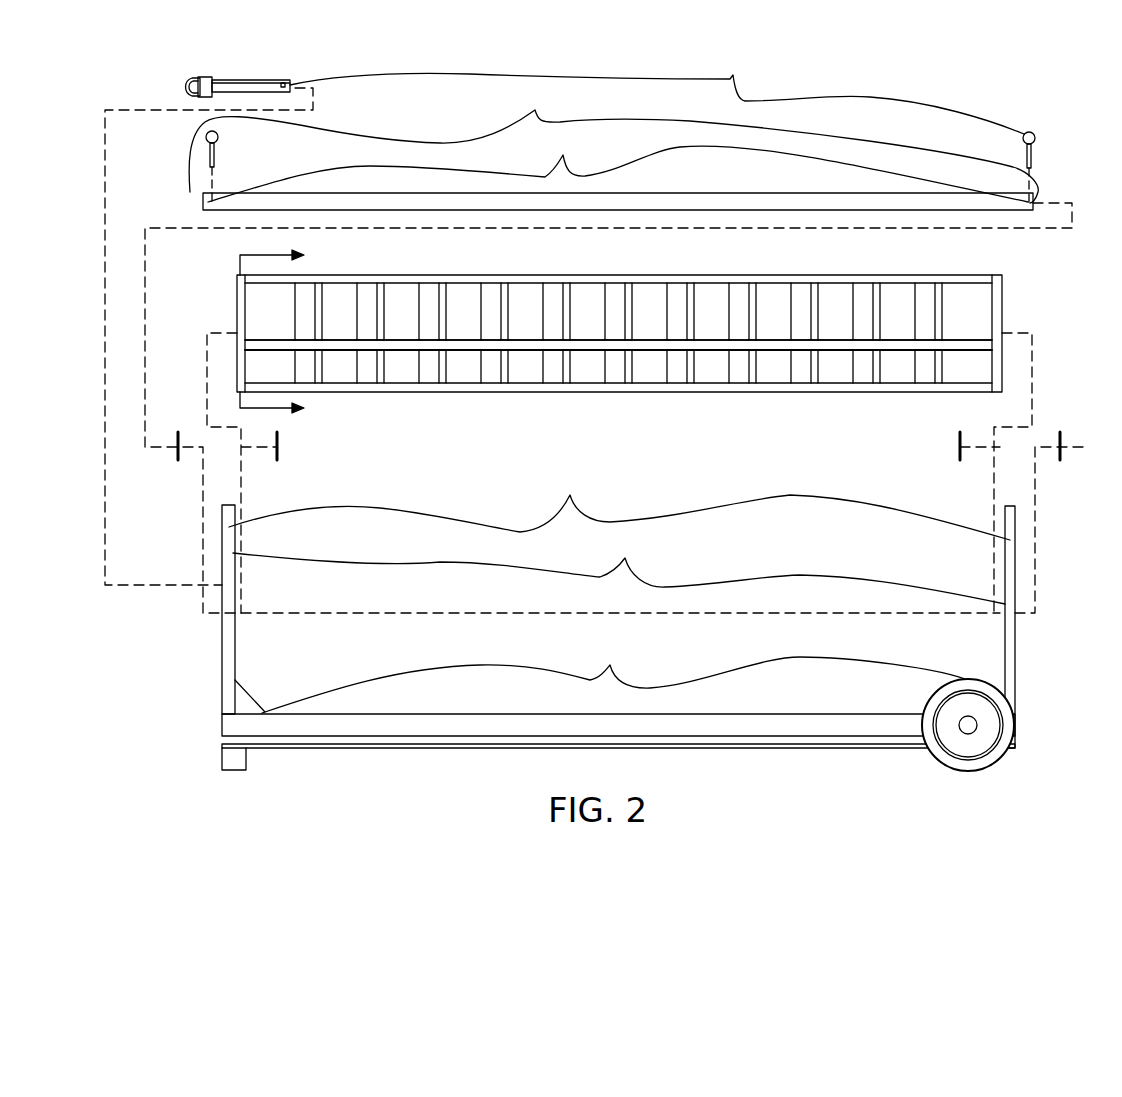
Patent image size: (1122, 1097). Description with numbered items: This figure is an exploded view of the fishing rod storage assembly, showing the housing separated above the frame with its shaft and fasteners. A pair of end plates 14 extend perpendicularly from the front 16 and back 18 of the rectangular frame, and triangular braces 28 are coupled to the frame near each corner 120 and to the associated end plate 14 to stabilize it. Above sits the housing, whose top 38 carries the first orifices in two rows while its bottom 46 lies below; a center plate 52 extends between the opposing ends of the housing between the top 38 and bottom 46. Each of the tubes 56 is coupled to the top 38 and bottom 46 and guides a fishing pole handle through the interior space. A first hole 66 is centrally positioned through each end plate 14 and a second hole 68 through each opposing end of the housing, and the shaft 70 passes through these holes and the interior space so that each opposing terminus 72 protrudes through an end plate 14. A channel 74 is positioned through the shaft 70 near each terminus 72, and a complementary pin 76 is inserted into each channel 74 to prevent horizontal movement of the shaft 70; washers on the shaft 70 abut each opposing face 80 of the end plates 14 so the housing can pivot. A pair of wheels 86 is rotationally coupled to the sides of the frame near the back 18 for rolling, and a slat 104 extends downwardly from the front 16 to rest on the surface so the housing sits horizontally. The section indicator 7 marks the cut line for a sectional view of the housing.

The end plates 14 is at (619, 500).
The front 16 is at (597, 658).
The back 18 is at (1020, 740).
The braces 28 is at (616, 673).
The top 38 is at (619, 345).
The bottom 46 is at (741, 384).
The center plate 52 is at (838, 345).
The tubes 56 is at (555, 318).
The first holes 66 is at (619, 567).
The second holes 68 is at (237, 331).
The shaft 70 is at (655, 193).
The opposing terminus 72 is at (613, 141).
The channels 74 is at (618, 165).
The pins 76 is at (564, 321).
The opposing face 80 is at (656, 626).
The wheels 86 is at (972, 770).
The slat 104 is at (235, 768).
The corner 120 is at (233, 713).
The section line 7 is at (283, 332).